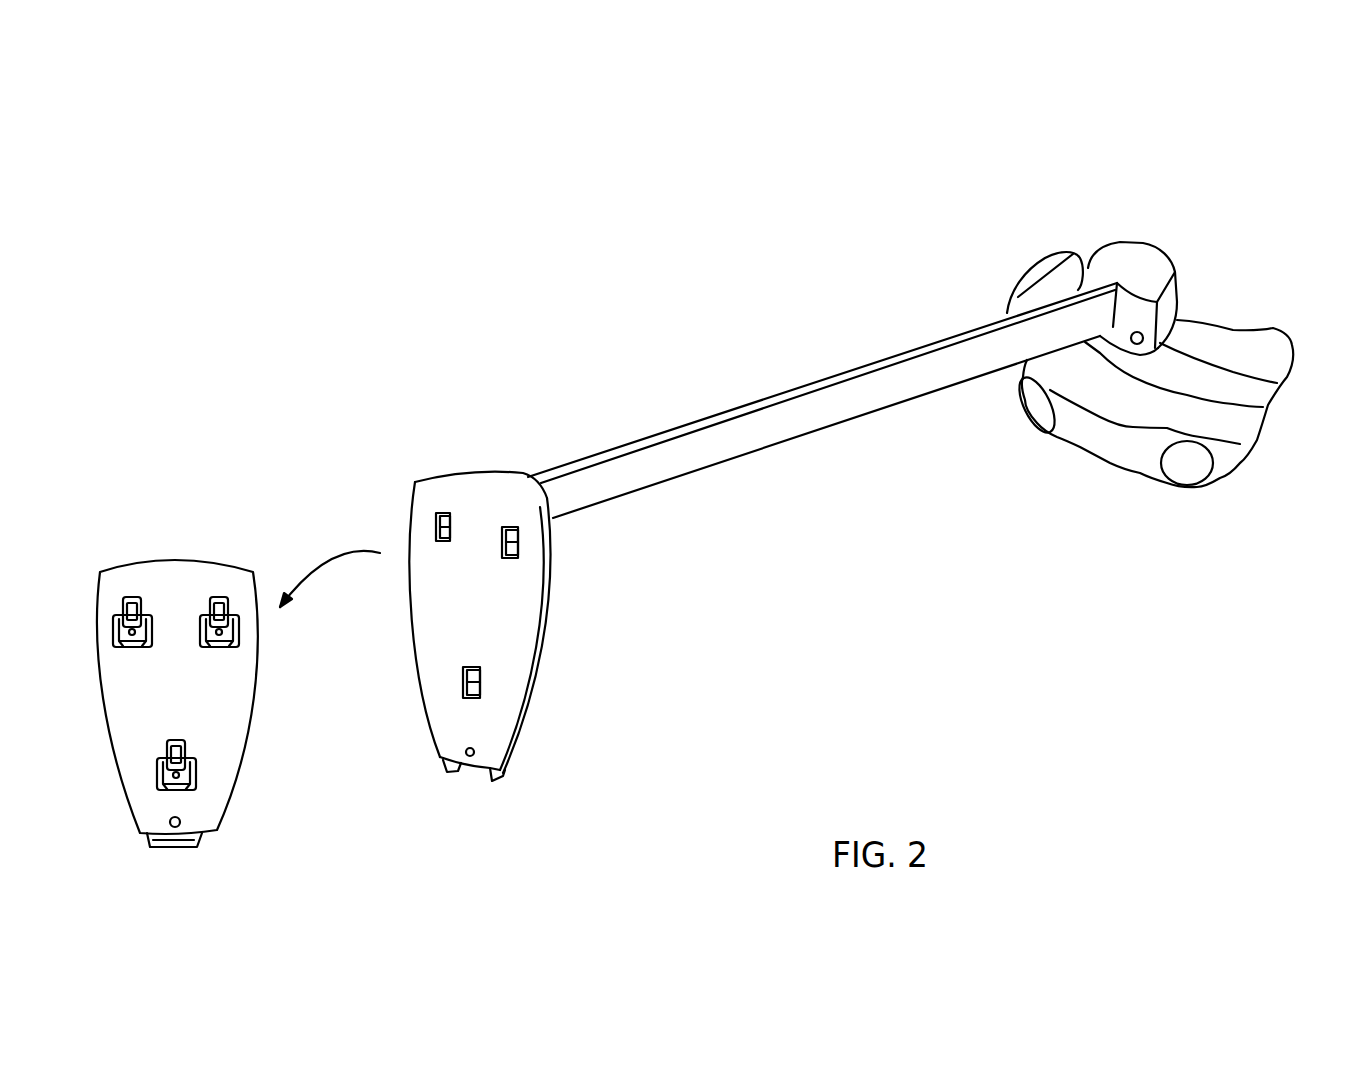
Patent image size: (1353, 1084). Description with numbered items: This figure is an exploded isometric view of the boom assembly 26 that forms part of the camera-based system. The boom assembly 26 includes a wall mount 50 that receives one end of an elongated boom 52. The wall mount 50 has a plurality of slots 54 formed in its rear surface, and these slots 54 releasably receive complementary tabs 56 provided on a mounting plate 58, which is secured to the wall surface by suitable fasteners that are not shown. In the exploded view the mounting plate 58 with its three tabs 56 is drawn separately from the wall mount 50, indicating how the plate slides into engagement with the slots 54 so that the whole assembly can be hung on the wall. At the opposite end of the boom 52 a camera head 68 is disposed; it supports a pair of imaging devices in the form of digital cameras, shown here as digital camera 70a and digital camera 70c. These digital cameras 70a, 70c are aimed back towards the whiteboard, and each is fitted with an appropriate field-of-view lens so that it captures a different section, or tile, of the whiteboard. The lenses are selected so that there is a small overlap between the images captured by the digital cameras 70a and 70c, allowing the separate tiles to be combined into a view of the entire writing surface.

The boom assembly 26 is at (887, 200).
The wall mount 50 is at (453, 458).
The elongated boom 52 is at (753, 433).
The slots 54 is at (435, 522).
The tabs 56 is at (130, 600).
The mounting plate 58 is at (213, 685).
The camera head 68 is at (1110, 381).
The digital camera 70a is at (1027, 405).
The digital camera 70c is at (1187, 465).